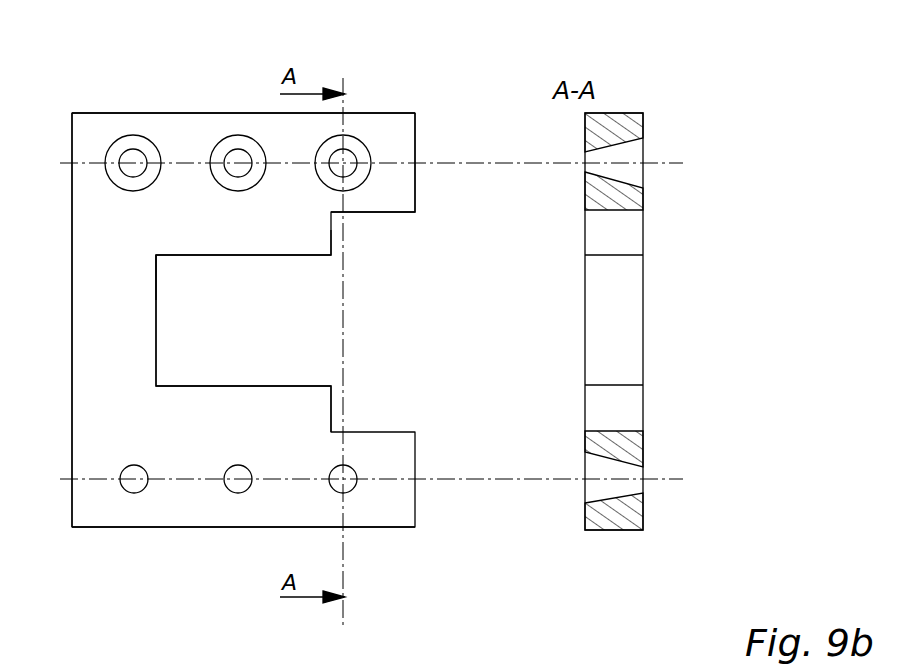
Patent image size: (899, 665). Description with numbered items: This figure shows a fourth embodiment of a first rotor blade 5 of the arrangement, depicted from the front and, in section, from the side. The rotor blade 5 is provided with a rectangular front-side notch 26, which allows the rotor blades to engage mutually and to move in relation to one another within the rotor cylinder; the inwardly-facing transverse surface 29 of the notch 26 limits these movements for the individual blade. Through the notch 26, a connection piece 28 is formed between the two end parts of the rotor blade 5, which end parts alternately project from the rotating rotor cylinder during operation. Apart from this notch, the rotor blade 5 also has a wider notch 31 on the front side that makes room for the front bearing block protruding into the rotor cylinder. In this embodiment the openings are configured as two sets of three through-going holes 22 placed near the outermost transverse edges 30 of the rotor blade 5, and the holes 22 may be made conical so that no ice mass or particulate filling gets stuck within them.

The rotor blade 5 is at (128, 86).
The through-going holes 22 is at (238, 135).
The front-side notch 26 is at (240, 368).
The connection piece 28 is at (105, 372).
The inwardly-facing transverse surface 29 is at (253, 257).
The outermost transverse edge 30 is at (183, 112).
The wider notch 31 is at (386, 236).